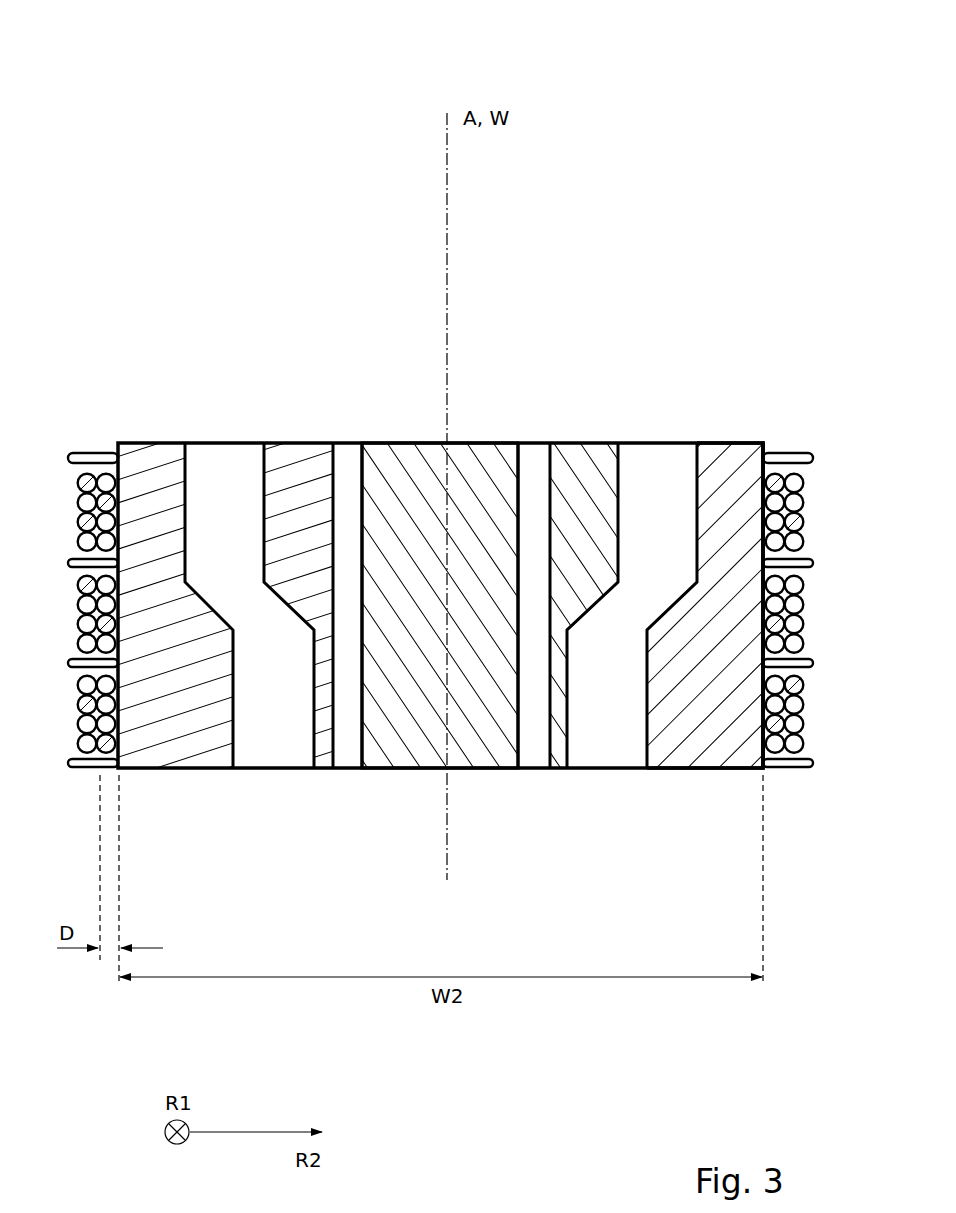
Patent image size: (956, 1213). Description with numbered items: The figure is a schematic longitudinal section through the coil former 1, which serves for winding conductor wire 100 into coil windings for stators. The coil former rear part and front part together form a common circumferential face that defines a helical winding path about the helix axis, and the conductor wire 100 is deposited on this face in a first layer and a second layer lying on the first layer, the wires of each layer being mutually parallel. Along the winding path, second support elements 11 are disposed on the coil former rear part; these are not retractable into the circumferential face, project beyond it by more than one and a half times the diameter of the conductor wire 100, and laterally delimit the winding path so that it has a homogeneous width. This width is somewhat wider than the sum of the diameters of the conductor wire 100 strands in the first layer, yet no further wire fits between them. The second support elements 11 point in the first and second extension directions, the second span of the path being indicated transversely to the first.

The coil former 1 is at (108, 118).
The second support elements 11 is at (72, 452).
The conductor wire 100 is at (75, 520).